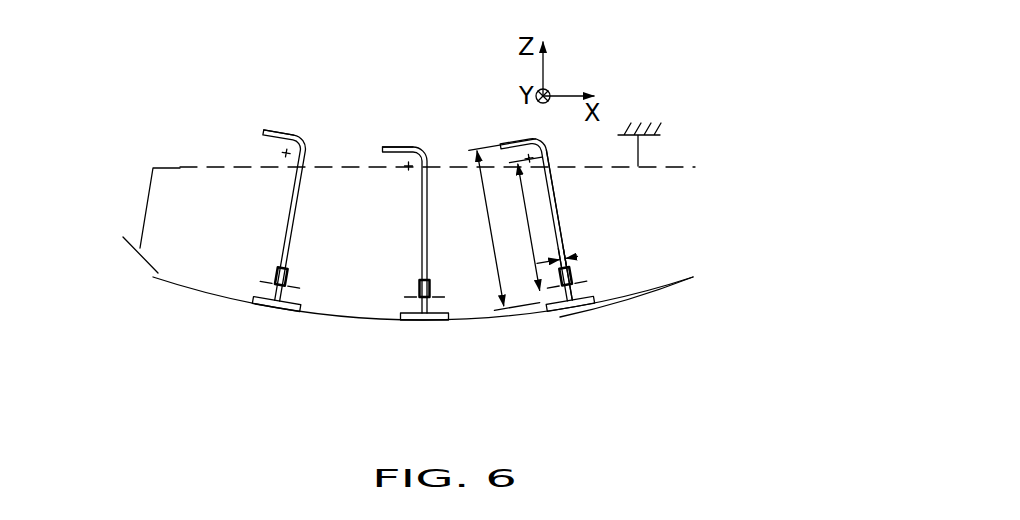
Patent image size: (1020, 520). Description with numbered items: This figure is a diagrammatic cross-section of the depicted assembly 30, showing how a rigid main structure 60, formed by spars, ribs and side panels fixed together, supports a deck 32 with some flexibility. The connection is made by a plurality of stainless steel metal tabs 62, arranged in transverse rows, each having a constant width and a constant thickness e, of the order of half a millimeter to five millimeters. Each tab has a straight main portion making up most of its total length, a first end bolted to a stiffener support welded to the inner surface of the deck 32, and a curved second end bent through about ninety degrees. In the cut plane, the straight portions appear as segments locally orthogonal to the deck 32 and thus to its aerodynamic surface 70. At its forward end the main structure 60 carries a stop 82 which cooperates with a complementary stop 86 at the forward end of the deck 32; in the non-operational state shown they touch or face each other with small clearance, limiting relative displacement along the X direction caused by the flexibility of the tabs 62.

The stator assembly 30 is at (203, 92).
The deck 32 is at (652, 300).
The main structure 60 is at (660, 134).
The metal tab 62 is at (571, 233).
The aerodynamic surface 70 is at (620, 300).
The stop 82 is at (143, 200).
The complementary stop 86 is at (138, 262).
The thickness e is at (585, 254).